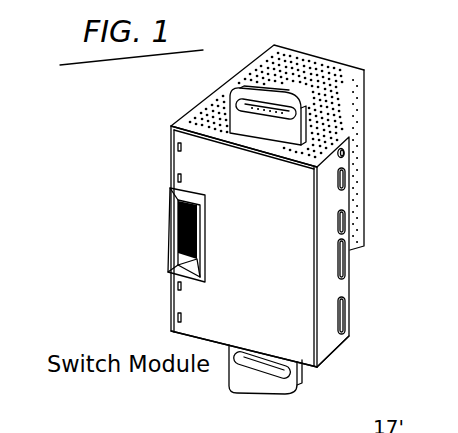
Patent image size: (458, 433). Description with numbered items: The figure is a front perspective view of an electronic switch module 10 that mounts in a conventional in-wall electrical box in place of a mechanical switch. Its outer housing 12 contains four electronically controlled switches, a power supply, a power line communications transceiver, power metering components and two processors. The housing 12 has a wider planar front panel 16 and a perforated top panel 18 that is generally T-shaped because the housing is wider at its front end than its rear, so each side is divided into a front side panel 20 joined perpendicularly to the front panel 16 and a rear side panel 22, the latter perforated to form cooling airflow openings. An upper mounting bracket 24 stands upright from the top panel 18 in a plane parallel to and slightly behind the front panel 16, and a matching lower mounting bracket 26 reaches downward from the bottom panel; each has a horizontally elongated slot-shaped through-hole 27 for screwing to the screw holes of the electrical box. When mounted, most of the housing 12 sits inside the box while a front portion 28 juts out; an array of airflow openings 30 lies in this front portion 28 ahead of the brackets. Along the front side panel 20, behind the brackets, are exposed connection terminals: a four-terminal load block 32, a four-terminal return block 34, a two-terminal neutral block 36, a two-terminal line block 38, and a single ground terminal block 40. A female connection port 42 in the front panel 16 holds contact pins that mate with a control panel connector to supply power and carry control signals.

The electronic switch module 10 is at (406, 112).
The outer housing 12 is at (331, 54).
The front panel 16 is at (203, 323).
The top panel 18 is at (279, 57).
The front side panel 20 is at (326, 344).
The rear side panel 22 is at (357, 247).
The upper mounting bracket 24 is at (283, 133).
The lower mounting bracket 26 is at (265, 380).
The slot-shaped through-hole 27 is at (262, 118).
The front portion 28 is at (204, 165).
The airflow openings 30 is at (193, 124).
The terminal block 32 is at (345, 266).
The four-terminal block 34 is at (345, 317).
The terminal block 36 is at (345, 224).
The second two-terminal block 38 is at (346, 176).
The single terminal block 40 is at (345, 153).
The female connection port 42 is at (165, 230).